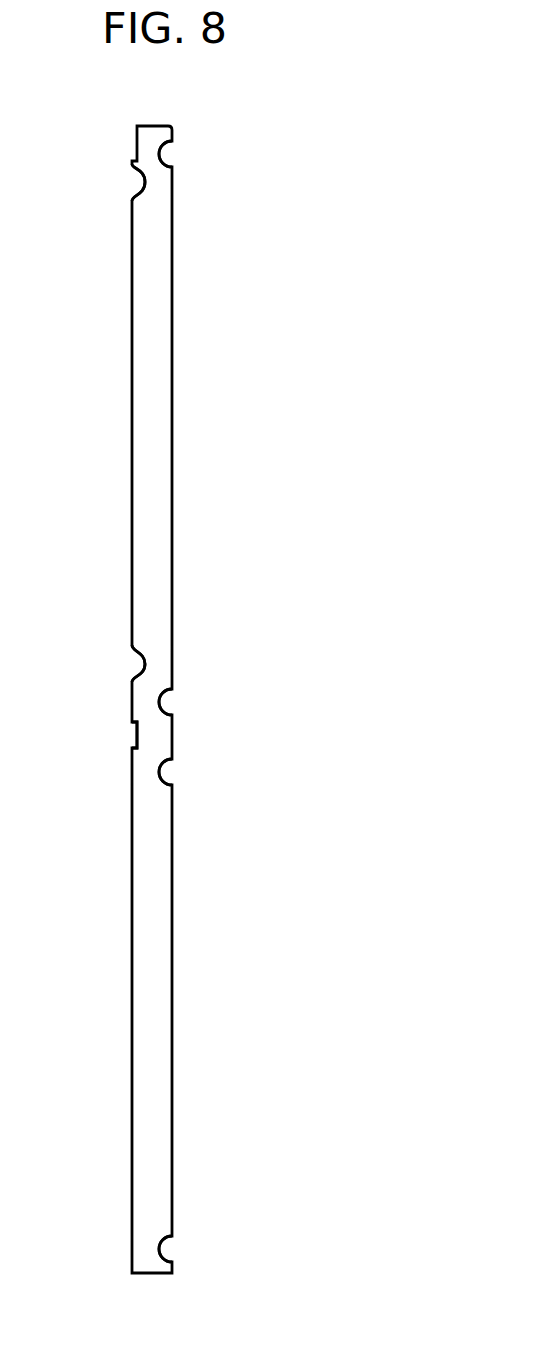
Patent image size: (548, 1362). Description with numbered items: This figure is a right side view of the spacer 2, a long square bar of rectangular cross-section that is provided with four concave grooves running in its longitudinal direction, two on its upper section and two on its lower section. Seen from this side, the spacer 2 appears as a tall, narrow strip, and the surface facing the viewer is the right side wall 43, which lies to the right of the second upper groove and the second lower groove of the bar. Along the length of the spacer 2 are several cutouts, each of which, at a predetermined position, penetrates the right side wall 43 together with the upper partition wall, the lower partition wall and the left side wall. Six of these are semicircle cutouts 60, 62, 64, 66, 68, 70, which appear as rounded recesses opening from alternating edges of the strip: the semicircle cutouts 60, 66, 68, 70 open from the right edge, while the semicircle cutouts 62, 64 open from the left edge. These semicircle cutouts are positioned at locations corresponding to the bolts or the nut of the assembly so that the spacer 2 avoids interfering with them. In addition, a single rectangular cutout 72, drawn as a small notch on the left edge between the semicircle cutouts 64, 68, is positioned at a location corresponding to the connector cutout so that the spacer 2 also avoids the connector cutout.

The spacer 2 is at (197, 119).
The second side wall 43 is at (158, 357).
The semicircle cutout 60 is at (160, 152).
The semicircle cutout 62 is at (140, 188).
The semicircle cutout 64 is at (140, 666).
The semicircle cutout 66 is at (159, 700).
The semicircle cutout 68 is at (159, 770).
The semicircle cutout 70 is at (160, 1250).
The rectangular cutout 72 is at (136, 735).